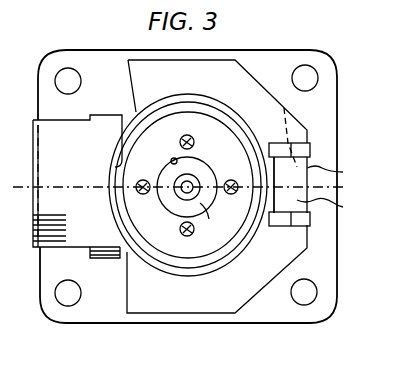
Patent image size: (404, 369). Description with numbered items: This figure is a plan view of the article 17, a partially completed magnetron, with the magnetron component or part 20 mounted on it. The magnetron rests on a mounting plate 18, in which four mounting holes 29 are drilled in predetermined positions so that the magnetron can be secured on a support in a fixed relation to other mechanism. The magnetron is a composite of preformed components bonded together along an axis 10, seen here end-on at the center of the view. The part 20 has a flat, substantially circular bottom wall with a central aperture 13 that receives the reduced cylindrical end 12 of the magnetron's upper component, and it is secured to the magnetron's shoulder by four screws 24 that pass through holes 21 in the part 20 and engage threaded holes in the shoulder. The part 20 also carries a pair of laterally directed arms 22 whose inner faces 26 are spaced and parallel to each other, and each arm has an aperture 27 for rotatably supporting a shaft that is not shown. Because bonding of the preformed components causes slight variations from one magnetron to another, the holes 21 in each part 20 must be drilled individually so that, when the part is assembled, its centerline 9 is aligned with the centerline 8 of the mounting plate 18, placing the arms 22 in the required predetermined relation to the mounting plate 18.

The centerline of the mounting plate 8 is at (301, 198).
The centerline of the part 9 is at (216, 202).
The axis 10 is at (189, 186).
The reduced cylindrical end 12 is at (211, 222).
The central aperture 13 is at (174, 158).
The article 17 is at (264, 80).
The mounting plate 18 is at (52, 267).
The magnetron component or part 20 is at (134, 256).
The holes 21 is at (197, 135).
The laterally directed arms 22 is at (310, 146).
The screws 24 is at (145, 181).
The inner faces 26 is at (331, 191).
The apertures 27 is at (278, 246).
The mounting holes 29 is at (70, 298).